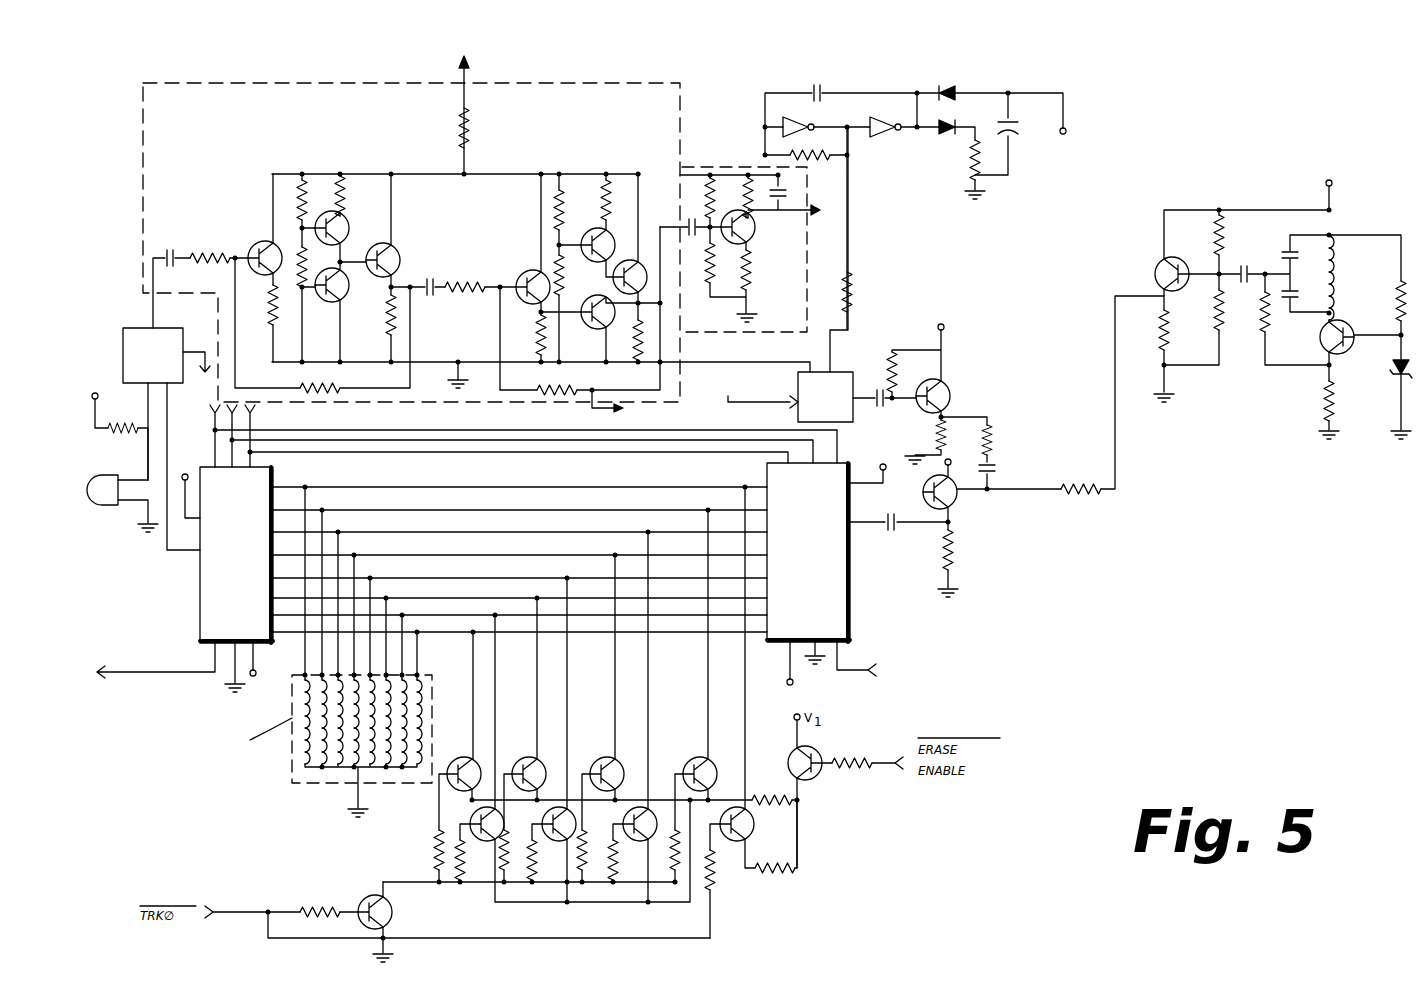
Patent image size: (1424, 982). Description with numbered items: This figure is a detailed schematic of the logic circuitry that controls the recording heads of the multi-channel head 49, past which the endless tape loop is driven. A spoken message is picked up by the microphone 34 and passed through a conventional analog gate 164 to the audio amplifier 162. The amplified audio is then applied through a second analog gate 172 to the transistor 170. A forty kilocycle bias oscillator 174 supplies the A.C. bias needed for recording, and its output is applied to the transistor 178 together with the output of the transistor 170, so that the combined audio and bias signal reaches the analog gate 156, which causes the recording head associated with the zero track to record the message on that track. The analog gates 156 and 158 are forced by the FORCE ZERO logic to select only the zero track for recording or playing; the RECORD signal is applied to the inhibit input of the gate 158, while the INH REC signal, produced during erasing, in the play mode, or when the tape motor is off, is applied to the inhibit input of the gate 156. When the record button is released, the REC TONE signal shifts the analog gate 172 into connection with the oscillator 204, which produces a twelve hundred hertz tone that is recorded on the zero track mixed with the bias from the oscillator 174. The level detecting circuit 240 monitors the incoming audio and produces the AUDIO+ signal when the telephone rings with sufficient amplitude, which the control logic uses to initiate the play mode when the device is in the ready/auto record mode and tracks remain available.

The audio amplifier 162 is at (334, 83).
The analog gate 164 is at (140, 326).
The microphone 34 is at (110, 506).
The analog gate 158 is at (215, 599).
The analog gate 156 is at (837, 618).
The multi-channel head 49 is at (322, 783).
The analog gate 172 is at (850, 367).
The transistor 170 is at (950, 390).
The transistor 178 is at (962, 508).
The level detecting circuit 240 is at (788, 280).
The oscillator 204 is at (924, 165).
The bias oscillator 174 is at (1262, 402).